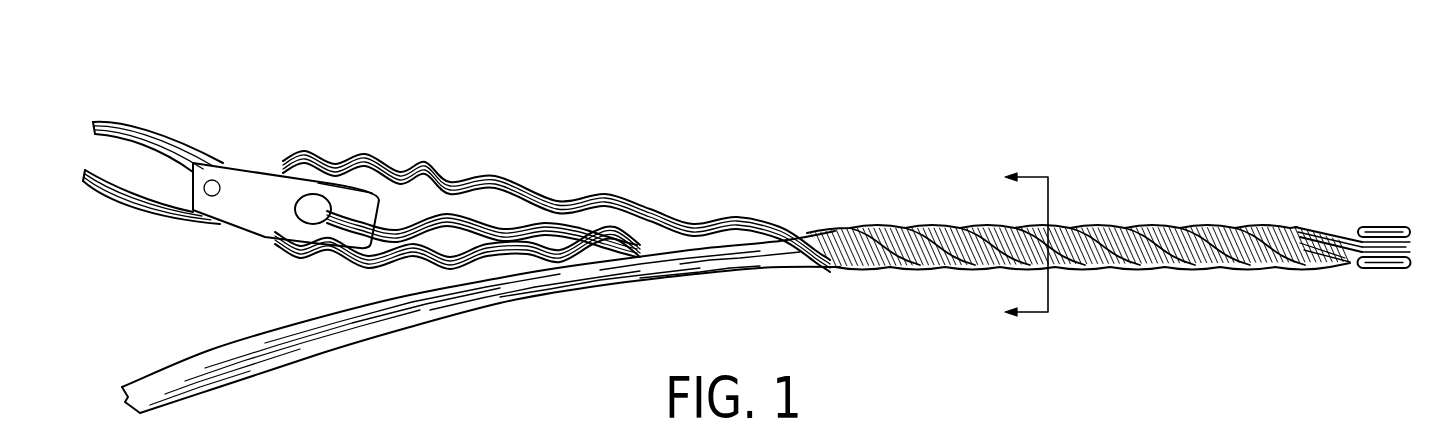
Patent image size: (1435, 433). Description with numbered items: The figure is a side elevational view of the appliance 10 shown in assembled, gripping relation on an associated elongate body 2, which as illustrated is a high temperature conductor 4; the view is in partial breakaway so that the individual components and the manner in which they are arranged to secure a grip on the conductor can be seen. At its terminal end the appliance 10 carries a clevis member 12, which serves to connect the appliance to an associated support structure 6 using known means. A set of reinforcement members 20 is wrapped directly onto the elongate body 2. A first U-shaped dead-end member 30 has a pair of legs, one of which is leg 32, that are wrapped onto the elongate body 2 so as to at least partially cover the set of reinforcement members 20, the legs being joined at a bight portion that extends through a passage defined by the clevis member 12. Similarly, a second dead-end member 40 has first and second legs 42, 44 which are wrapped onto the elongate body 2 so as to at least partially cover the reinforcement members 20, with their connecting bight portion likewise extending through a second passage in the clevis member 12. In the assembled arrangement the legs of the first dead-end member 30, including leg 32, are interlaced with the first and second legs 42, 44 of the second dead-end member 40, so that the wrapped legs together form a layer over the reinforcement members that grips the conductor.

The appliance 10 is at (708, 103).
The associated elongate body 2 is at (367, 335).
The high temperature conductor 4 is at (269, 357).
The associated support structure 6 is at (169, 128).
The clevis member 12 is at (259, 160).
The set of reinforcement members 20 is at (1250, 222).
The first U-shaped dead-end member 30 is at (458, 220).
The leg of first dead-end member 32 is at (1351, 245).
The second dead-end member 40 is at (381, 160).
The first leg of second dead-end member 42 is at (1398, 225).
The second leg of second dead-end member 44 is at (1396, 270).